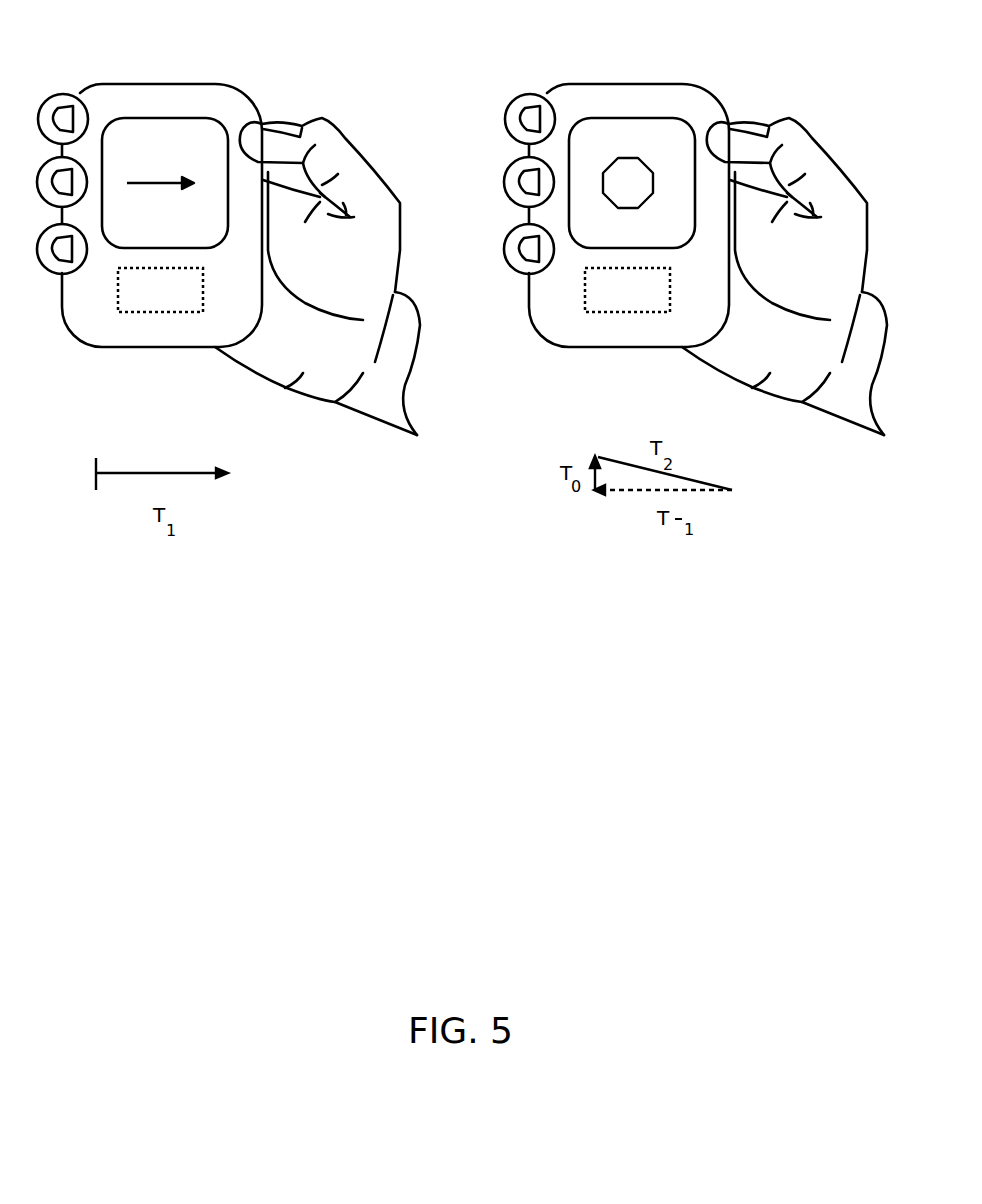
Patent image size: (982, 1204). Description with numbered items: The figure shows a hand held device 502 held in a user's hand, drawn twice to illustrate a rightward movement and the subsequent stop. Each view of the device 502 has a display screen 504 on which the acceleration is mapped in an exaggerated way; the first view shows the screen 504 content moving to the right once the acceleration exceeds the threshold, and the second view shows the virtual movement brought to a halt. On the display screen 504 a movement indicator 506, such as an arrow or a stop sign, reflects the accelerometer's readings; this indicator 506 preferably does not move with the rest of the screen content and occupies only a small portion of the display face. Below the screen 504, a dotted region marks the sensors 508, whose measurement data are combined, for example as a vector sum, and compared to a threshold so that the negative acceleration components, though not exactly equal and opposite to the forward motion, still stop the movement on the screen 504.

The handheld device 502 is at (243, 93).
The display screen 504 is at (127, 118).
The movement indicator 506 is at (150, 186).
The sensors 508 is at (190, 313).